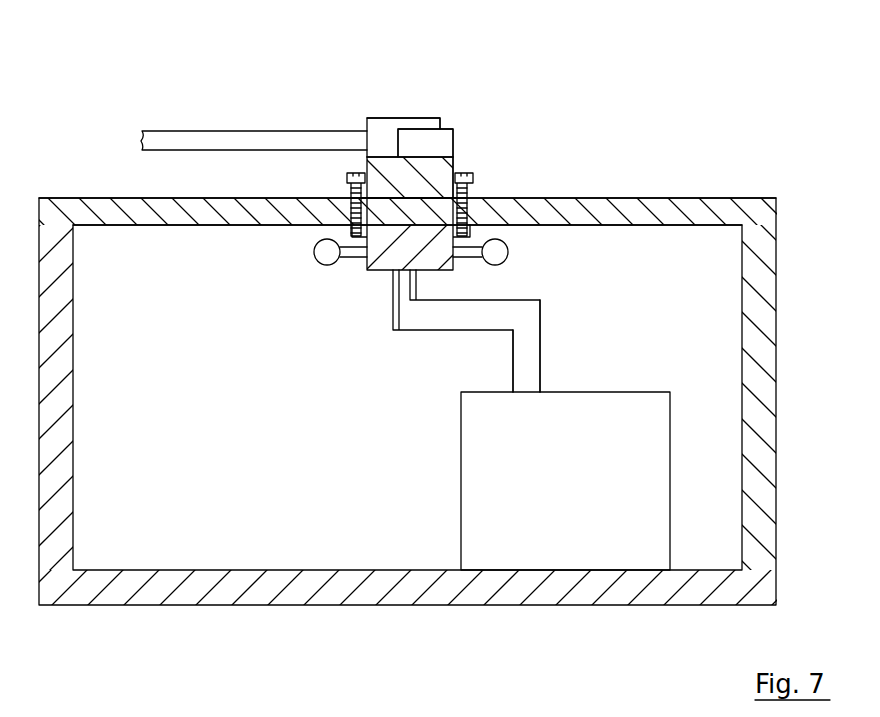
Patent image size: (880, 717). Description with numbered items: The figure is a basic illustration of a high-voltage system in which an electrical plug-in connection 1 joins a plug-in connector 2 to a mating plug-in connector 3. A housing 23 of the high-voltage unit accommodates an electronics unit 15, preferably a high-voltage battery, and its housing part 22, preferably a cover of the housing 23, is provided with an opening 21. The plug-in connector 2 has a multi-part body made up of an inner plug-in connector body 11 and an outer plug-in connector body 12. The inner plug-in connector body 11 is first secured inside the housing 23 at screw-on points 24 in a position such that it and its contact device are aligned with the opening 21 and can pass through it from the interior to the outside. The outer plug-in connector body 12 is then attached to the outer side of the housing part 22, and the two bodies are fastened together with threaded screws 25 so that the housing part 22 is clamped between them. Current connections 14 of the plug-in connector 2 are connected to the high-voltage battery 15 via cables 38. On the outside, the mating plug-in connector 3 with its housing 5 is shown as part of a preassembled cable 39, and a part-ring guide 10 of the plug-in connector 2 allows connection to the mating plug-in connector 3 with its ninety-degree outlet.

The electrical plug-in connection 1 is at (523, 135).
The plug-in connector 2 is at (477, 148).
The mating plug-in connector 3 is at (447, 122).
The housing 5 is at (387, 118).
The guide 10 is at (422, 133).
The inner plug-in connector body 11 is at (378, 262).
The outer plug-in connector body 12 is at (383, 153).
The current connections 14 is at (415, 283).
The electronics unit 15 is at (553, 497).
The opening 21 is at (477, 212).
The housing part 22 is at (745, 208).
The housing 23 is at (760, 348).
The screw-on points 24 is at (314, 252).
The threaded screws 25 is at (350, 177).
The cables 38 is at (515, 357).
The preassembled cable 39 is at (235, 131).